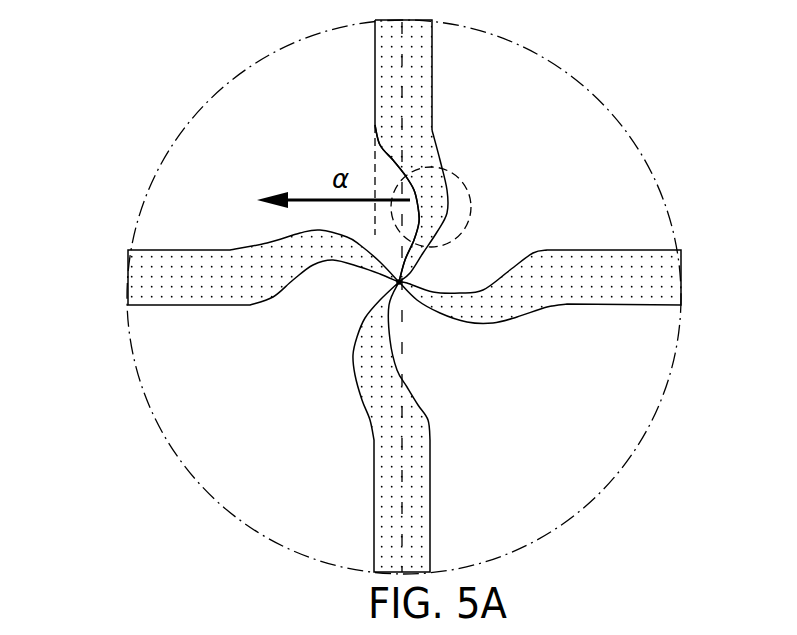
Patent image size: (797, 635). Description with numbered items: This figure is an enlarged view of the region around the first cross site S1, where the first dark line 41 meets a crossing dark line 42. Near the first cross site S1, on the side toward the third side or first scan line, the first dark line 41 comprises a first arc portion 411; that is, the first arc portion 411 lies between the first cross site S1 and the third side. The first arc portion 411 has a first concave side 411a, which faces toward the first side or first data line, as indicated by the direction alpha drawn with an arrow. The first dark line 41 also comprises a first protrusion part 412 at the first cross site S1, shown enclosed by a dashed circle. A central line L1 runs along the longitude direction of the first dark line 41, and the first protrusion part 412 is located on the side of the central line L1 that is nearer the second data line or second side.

The first dark line 41 is at (420, 137).
The first arc portion 411 is at (467, 217).
The first concave side 411a is at (410, 205).
The first protrusion part 412 is at (467, 187).
The second conductive line 42 is at (660, 275).
The first cross site S1 is at (421, 280).
The central line L1 is at (400, 523).